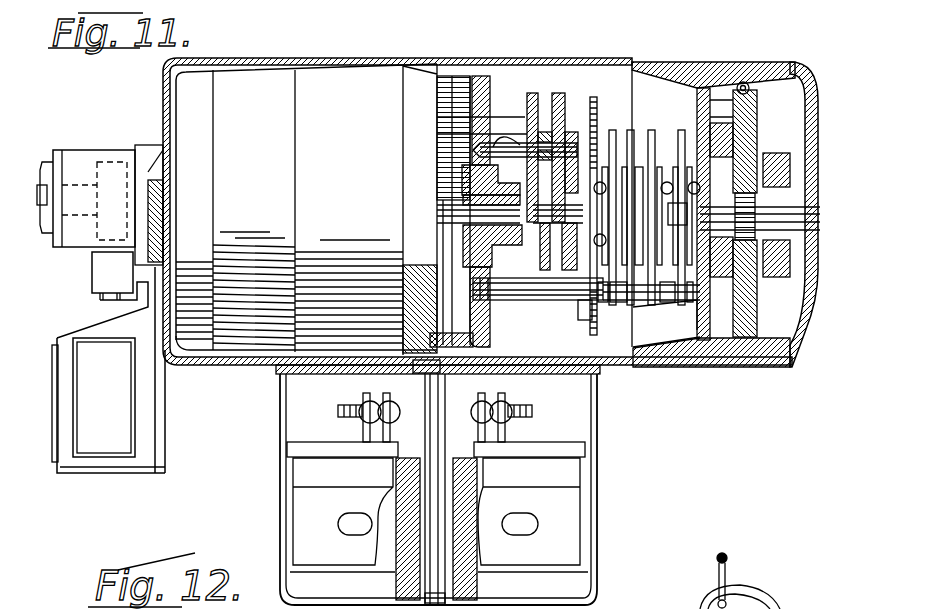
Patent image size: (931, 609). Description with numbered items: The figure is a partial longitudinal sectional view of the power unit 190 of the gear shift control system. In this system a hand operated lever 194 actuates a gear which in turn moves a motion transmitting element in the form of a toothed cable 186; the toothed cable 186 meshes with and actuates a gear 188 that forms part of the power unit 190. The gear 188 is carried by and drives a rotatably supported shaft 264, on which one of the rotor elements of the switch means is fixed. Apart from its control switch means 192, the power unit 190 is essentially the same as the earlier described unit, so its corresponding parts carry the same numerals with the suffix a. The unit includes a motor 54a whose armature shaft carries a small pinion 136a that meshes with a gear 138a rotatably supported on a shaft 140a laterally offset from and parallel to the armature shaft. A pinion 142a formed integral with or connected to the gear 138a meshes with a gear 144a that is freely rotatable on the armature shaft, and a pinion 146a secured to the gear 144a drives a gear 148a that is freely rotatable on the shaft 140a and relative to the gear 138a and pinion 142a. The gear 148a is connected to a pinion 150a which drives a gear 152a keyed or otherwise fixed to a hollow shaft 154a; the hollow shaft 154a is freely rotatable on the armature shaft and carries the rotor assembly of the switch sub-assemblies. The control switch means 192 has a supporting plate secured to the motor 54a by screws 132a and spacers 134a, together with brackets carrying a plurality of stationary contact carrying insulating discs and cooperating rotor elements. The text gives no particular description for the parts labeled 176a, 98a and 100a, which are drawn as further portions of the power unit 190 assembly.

In FIG. 11, the power unit 190 is at (345, 49).
In FIG. 11, the pinion 142a is at (543, 93).
In FIG. 11, the gear 148a is at (559, 93).
In FIG. 11, the pinion 150a is at (588, 140).
In FIG. 11, the hollow shaft 154a is at (619, 118).
In FIG. 11, the control switch means 192 is at (633, 68).
In FIG. 11, the toothed cable 186 is at (757, 62).
In FIG. 12, the toothed cable 186 is at (790, 608).
In FIG. 11, the gear 138a is at (437, 115).
In FIG. 11, the shaft 140a is at (437, 134).
In FIG. 11, the pinion 136a is at (472, 200).
In FIG. 11, the gear 144a is at (467, 255).
In FIG. 11, the screws 132a is at (523, 290).
In FIG. 11, the pinion 146a is at (552, 262).
In FIG. 11, the spacers 134a is at (590, 322).
In FIG. 11, the gear 152a is at (608, 307).
In FIG. 11, the shaft 264 is at (723, 258).
In FIG. 11, the gear 188 is at (747, 313).
In FIG. 11, the motor 54a is at (248, 338).
In FIG. 11, the mounting bracket 176a is at (106, 467).
In FIG. 11, the coil 98a is at (308, 476).
In FIG. 11, the coil 100a is at (566, 477).
In FIG. 12, the hand operated lever 194 is at (741, 557).